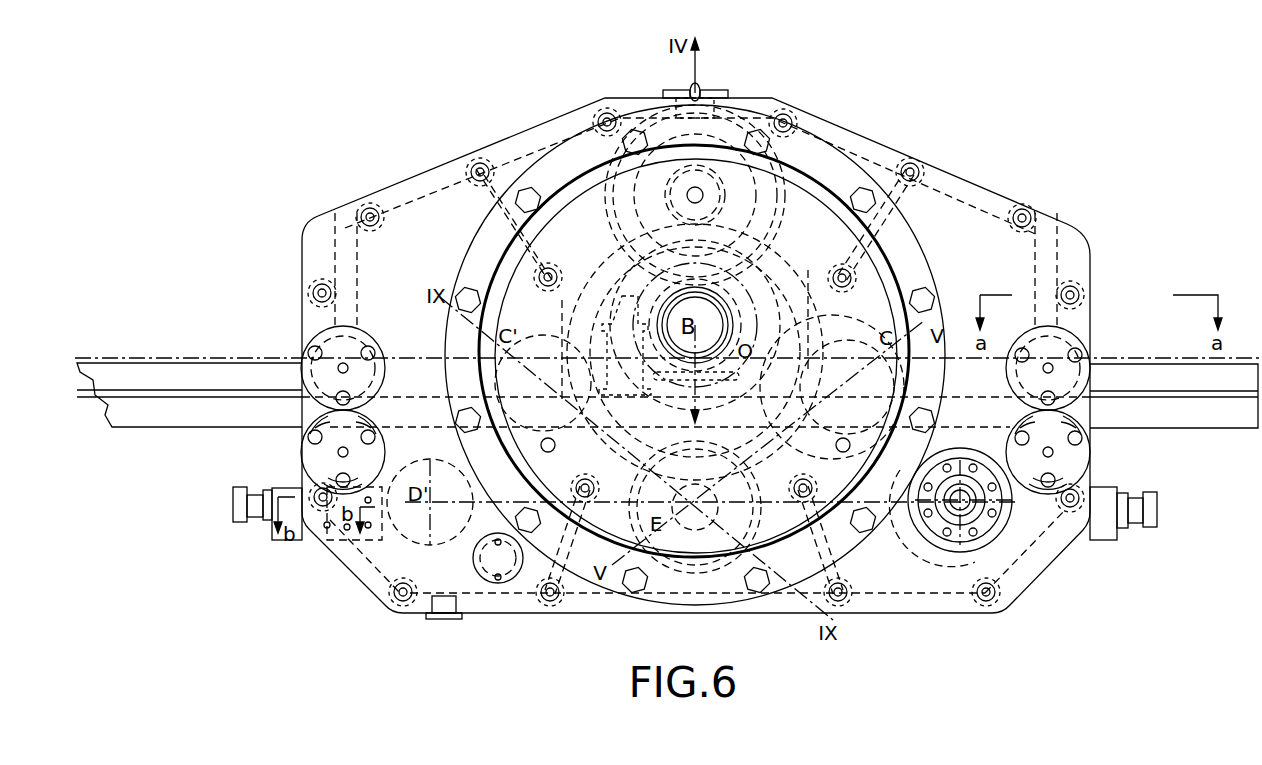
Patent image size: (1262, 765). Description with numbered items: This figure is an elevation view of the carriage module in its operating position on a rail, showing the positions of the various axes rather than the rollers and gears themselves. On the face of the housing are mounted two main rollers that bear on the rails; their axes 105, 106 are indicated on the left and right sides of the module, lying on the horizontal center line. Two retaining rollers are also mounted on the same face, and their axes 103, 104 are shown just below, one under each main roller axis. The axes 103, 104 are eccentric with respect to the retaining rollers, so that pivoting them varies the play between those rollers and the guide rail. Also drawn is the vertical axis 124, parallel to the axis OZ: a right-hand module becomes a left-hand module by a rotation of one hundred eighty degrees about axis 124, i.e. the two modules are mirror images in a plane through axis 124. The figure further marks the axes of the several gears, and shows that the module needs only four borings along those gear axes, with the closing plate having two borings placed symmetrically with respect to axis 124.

The axis of retaining roller 103 is at (338, 452).
The axis of retaining roller 104 is at (1054, 453).
The axis of roller 105 is at (340, 366).
The axis of roller 106 is at (1052, 366).
The axis of symmetry 124 is at (704, 88).